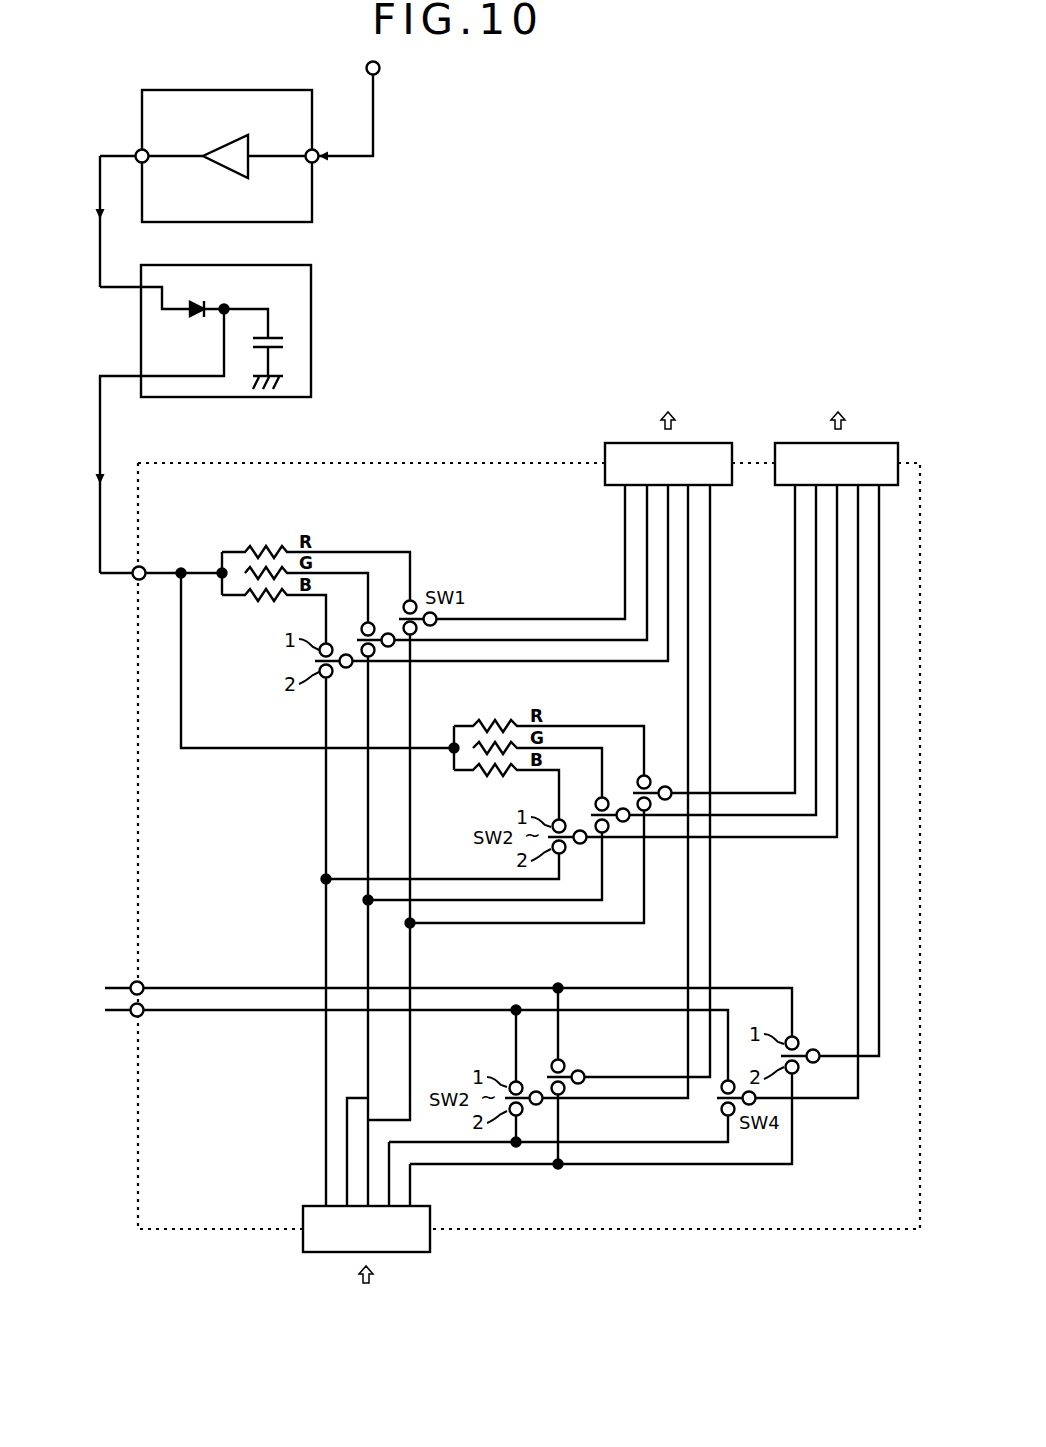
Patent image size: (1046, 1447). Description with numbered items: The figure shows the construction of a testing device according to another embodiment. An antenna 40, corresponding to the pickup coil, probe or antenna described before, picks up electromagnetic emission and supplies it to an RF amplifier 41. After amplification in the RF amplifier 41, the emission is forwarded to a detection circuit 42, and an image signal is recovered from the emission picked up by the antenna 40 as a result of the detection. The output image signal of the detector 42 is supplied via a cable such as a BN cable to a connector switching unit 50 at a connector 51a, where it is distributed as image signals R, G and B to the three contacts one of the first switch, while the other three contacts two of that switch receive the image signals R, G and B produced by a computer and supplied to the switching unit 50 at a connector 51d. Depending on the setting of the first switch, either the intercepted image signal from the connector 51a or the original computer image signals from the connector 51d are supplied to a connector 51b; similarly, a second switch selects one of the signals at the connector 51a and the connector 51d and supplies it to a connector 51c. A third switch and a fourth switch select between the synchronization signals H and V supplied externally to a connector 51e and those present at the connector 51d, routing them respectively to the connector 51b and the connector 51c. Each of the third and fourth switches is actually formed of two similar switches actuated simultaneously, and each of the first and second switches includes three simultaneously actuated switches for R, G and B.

The antenna 40 is at (381, 66).
The RF amplifier 41 is at (266, 90).
The detection circuit 42 is at (266, 265).
The connector switching unit 50 is at (178, 460).
The connector 51a is at (134, 581).
The connector 51b is at (605, 482).
The connector 51c is at (775, 482).
The connector 51d is at (301, 1187).
The connector 51e is at (102, 992).